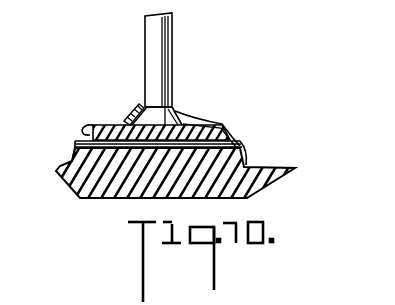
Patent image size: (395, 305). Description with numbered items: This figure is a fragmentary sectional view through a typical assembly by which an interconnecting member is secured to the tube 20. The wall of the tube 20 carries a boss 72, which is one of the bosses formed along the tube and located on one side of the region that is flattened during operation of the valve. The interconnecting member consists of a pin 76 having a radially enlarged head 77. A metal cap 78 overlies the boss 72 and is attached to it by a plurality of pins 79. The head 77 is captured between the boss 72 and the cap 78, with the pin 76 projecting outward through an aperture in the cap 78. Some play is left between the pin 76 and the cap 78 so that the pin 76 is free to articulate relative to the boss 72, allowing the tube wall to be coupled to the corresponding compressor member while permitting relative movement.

The tube 20 is at (65, 162).
The boss 72 is at (108, 127).
The pin 76 is at (156, 38).
The radially enlarged head 77 is at (143, 113).
The metal cap 78 is at (220, 121).
The pins 79 is at (240, 141).